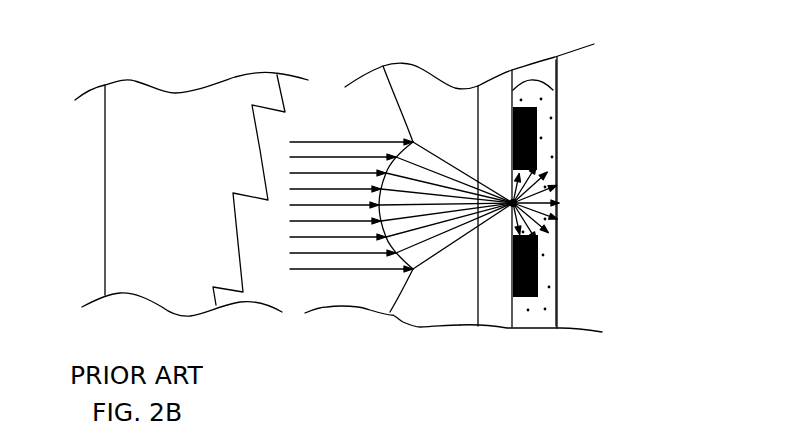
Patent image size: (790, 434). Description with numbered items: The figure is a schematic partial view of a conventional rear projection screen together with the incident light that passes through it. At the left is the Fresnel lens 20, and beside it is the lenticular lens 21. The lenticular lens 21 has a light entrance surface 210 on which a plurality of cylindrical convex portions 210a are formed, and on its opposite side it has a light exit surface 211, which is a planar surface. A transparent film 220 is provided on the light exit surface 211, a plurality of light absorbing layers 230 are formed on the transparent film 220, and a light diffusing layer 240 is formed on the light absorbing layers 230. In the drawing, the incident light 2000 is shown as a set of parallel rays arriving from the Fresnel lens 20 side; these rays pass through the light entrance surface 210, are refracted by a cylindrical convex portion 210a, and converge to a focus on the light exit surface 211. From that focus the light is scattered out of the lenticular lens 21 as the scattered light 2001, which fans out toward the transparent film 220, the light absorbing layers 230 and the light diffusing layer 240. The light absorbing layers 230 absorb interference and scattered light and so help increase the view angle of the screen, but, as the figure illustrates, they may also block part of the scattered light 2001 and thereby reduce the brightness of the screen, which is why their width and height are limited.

The Fresnel lens 20 is at (150, 100).
The light entrance surface 210 is at (382, 68).
The cylindrical convex portions 210a is at (408, 307).
The lenticular lens 21 is at (493, 88).
The light exit surface 211 is at (557, 94).
The transparent film 220 is at (493, 310).
The light diffusing layer 240 is at (538, 318).
The light absorbing layers 230 is at (538, 283).
The incident light 2000 is at (333, 272).
The scattered light 2001 is at (555, 203).